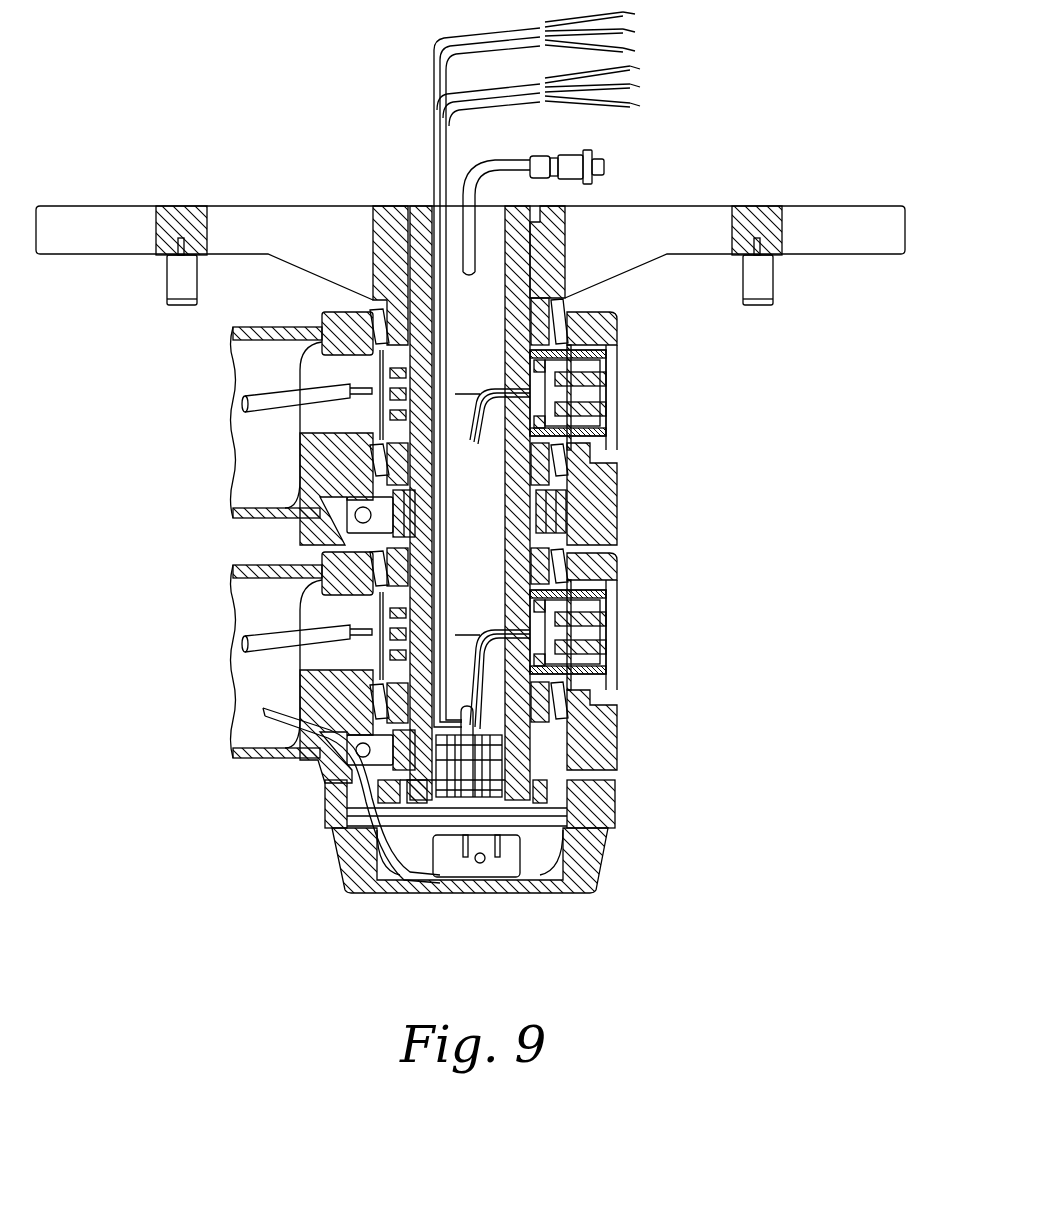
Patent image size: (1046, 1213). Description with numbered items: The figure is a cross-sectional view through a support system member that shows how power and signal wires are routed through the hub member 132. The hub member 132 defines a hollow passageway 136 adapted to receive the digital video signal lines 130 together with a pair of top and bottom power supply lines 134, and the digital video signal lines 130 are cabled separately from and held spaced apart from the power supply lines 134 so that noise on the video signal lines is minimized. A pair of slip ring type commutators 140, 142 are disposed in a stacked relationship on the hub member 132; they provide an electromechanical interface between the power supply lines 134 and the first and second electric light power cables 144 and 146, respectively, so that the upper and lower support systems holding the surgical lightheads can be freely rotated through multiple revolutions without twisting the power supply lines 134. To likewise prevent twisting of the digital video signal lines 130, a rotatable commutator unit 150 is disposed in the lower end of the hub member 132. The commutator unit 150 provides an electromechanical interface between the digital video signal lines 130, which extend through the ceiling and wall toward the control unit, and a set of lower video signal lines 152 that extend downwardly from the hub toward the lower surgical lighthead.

The digital video signal lines 130 is at (626, 164).
The hub member 132 is at (210, 866).
The power supply lines 134 is at (660, 49).
The hollow passageway 136 is at (470, 533).
The slip ring type commutator 140 is at (636, 380).
The slip ring type commutator 142 is at (636, 618).
The first electric light power cable 144 is at (273, 393).
The second electric light power cable 146 is at (287, 622).
The rotatable commutator unit 150 is at (492, 768).
The lower video signal lines 152 is at (270, 712).